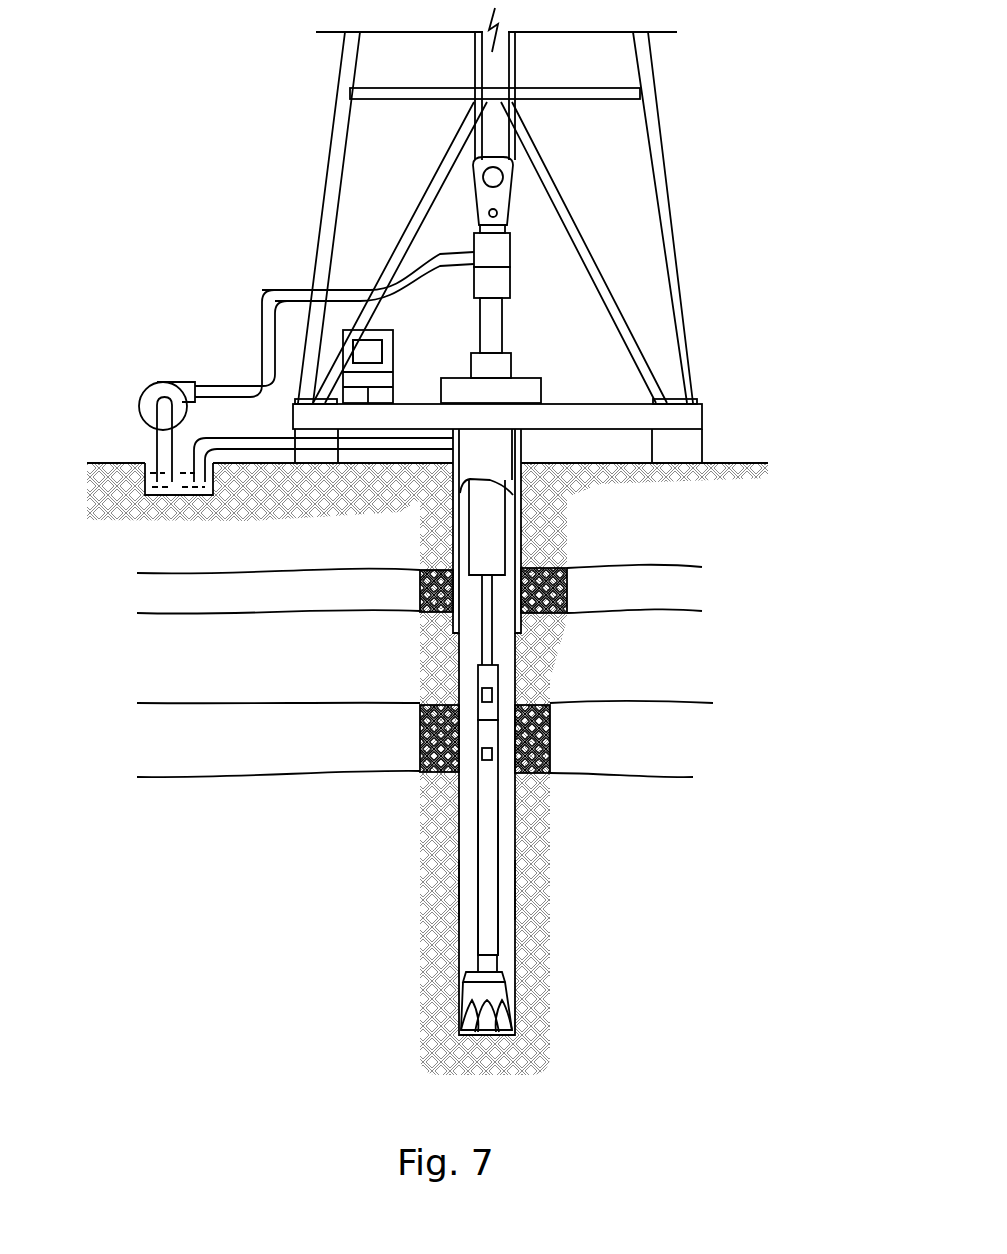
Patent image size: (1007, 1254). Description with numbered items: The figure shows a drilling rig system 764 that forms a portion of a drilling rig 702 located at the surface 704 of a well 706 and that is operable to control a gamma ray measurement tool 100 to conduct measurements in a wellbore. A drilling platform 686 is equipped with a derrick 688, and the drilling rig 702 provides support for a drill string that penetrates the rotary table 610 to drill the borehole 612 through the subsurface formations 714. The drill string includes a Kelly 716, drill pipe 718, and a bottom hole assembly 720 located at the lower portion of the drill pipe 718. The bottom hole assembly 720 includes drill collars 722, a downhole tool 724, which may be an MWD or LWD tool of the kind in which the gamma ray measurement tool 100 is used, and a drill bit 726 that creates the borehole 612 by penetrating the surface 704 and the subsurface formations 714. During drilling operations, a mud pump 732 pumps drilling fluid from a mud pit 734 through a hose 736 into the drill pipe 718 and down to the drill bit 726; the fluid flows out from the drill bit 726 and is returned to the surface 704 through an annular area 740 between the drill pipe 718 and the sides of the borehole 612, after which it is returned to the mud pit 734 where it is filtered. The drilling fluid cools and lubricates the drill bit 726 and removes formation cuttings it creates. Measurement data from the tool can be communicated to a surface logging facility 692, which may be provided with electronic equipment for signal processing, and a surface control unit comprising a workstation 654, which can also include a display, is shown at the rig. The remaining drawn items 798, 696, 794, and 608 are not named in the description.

The system 764 is at (217, 119).
The derrick 688 is at (657, 117).
The drilling rig 702 is at (676, 209).
The Kelly 716 is at (503, 318).
The rotary table drive 798 is at (511, 364).
The rotary table 610 is at (457, 379).
The drilling platform 686 is at (702, 412).
The workstation 654 is at (394, 342).
The display 696 is at (383, 352).
The surface logging facility 692 is at (383, 325).
The hose 736 is at (266, 290).
The mud pump 732 is at (172, 382).
The mud pit 734 is at (167, 491).
The surface 704 is at (722, 462).
The well 706 is at (530, 459).
The subsurface formations 714 is at (123, 570).
The bottom hole assembly 720 is at (413, 1035).
The drill collars 722 is at (504, 541).
The drill pipe 718 is at (488, 608).
The annular area 740 is at (508, 673).
The bottom hole assembly 794 is at (499, 720).
The gamma ray measurement tool 100 is at (493, 693).
The drill string 608 is at (503, 836).
The borehole 612 is at (515, 908).
The downhole tool 724 is at (488, 938).
The drill bit 726 is at (496, 993).